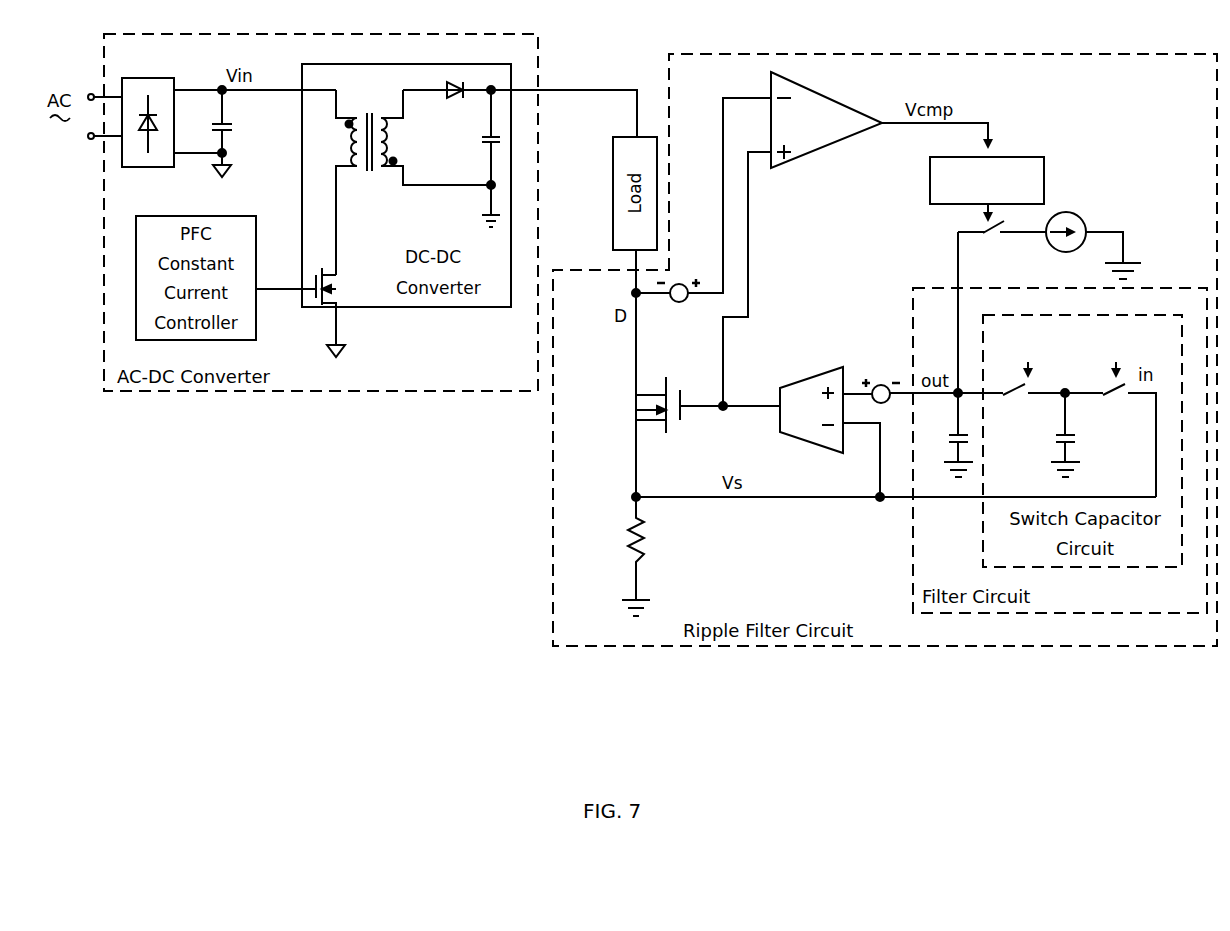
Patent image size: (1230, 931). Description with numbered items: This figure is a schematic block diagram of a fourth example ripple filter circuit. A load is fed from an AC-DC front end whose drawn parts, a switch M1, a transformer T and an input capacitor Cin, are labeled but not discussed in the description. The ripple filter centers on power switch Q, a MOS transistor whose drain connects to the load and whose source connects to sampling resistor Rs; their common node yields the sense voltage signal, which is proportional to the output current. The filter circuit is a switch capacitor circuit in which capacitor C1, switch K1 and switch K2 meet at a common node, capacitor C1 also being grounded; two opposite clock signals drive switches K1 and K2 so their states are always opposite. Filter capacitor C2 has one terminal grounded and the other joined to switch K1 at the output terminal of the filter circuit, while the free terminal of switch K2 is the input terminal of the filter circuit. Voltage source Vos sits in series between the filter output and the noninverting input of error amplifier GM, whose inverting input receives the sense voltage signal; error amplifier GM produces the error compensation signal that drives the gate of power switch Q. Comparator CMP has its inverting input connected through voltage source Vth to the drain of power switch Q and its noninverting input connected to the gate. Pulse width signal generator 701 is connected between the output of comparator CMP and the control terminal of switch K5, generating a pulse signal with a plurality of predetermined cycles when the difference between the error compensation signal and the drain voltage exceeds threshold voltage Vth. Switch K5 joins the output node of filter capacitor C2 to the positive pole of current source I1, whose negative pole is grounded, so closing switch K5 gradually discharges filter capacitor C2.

The pulse width signal generator 701 is at (987, 180).
The power transistor M1 is at (344, 308).
The transformer T is at (402, 182).
The input capacitor Cin is at (218, 133).
The power switch Q is at (695, 417).
The voltage source Vth is at (701, 217).
The comparator CMP is at (826, 120).
The error amplifier GM is at (811, 410).
The voltage source Vos is at (881, 374).
The switch K5 is at (1002, 239).
The current source I1 is at (1093, 245).
The sampling resistor Rs is at (620, 556).
The switch K1 is at (1011, 381).
The switch K2 is at (1110, 417).
The capacitor C1 is at (1055, 435).
The filter capacitor C2 is at (943, 435).